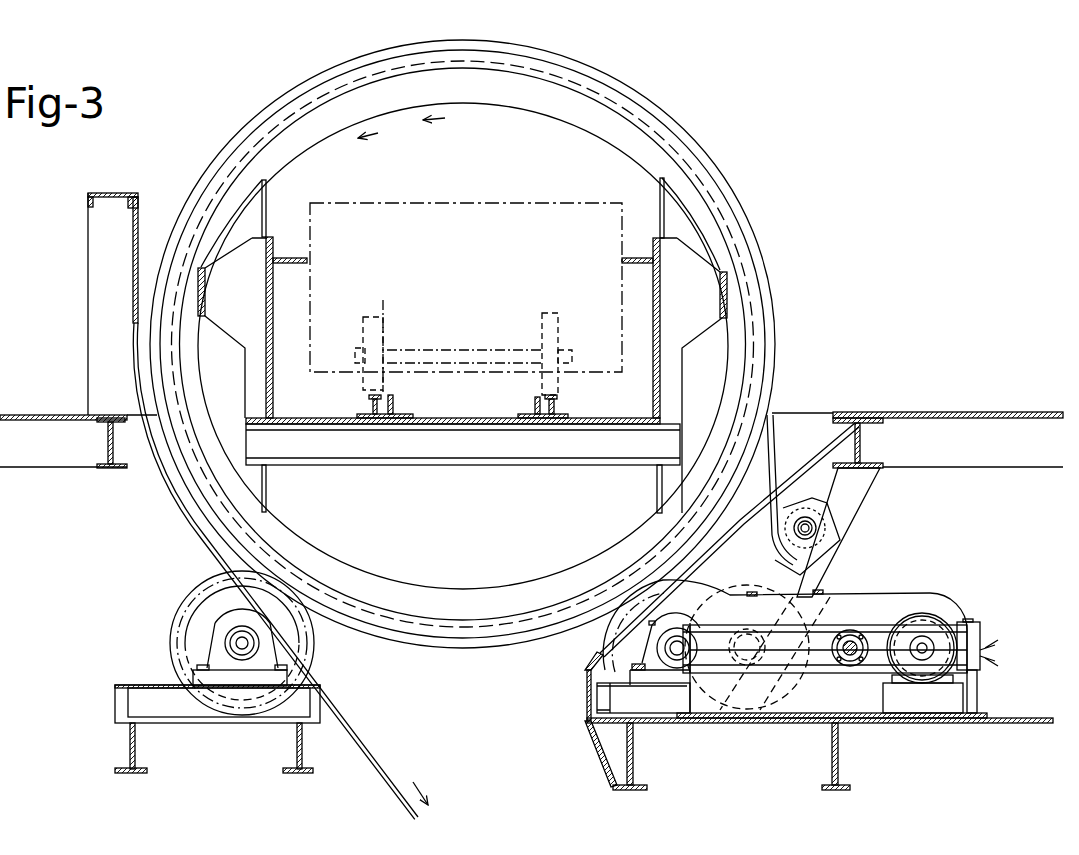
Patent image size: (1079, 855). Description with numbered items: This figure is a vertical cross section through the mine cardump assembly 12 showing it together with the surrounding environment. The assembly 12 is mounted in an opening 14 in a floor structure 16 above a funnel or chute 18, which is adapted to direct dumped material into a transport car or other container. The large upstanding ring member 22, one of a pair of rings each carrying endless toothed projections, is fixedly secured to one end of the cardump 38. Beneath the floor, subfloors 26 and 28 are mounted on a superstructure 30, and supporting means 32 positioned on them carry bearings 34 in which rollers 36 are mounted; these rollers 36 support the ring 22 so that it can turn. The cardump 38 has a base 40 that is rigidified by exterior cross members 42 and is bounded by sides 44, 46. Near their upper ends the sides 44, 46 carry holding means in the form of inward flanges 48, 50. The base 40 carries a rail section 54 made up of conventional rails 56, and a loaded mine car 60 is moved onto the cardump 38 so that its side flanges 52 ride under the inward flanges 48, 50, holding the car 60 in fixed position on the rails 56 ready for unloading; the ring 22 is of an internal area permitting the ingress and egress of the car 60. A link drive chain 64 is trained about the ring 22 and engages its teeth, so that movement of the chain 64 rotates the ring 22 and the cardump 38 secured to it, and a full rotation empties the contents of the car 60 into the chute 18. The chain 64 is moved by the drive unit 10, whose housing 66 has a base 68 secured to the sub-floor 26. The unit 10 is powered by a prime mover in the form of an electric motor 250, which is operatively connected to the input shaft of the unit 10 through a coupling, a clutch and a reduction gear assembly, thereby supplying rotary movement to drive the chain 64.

The drive unit 10 is at (819, 568).
The mine cardump assembly 12 is at (735, 163).
The opening 14 is at (815, 414).
The floor structure 16 is at (1003, 413).
The funnel or chute 18 is at (377, 748).
The ring member 22 is at (755, 232).
The subfloor 26 is at (1020, 717).
The subfloor 28 is at (168, 713).
The superstructure 30 is at (638, 762).
The supporting means 32 is at (113, 700).
The bearing 34 is at (215, 660).
The roller 36 is at (312, 650).
The cardump 38 is at (463, 456).
The base 40 is at (460, 417).
The exterior cross member 42 is at (473, 456).
The side 44 is at (272, 397).
The side 46 is at (653, 393).
The inward flange 48 is at (293, 256).
The inward flange 50 is at (643, 257).
The mine car side flange 52 is at (296, 275).
The rail section 54 is at (402, 400).
The rail 56 is at (557, 408).
The mine car 60 is at (522, 274).
The link drive chain 64 is at (777, 470).
The housing 66 is at (890, 588).
The base 68 is at (783, 718).
The electric motor 250 is at (960, 640).